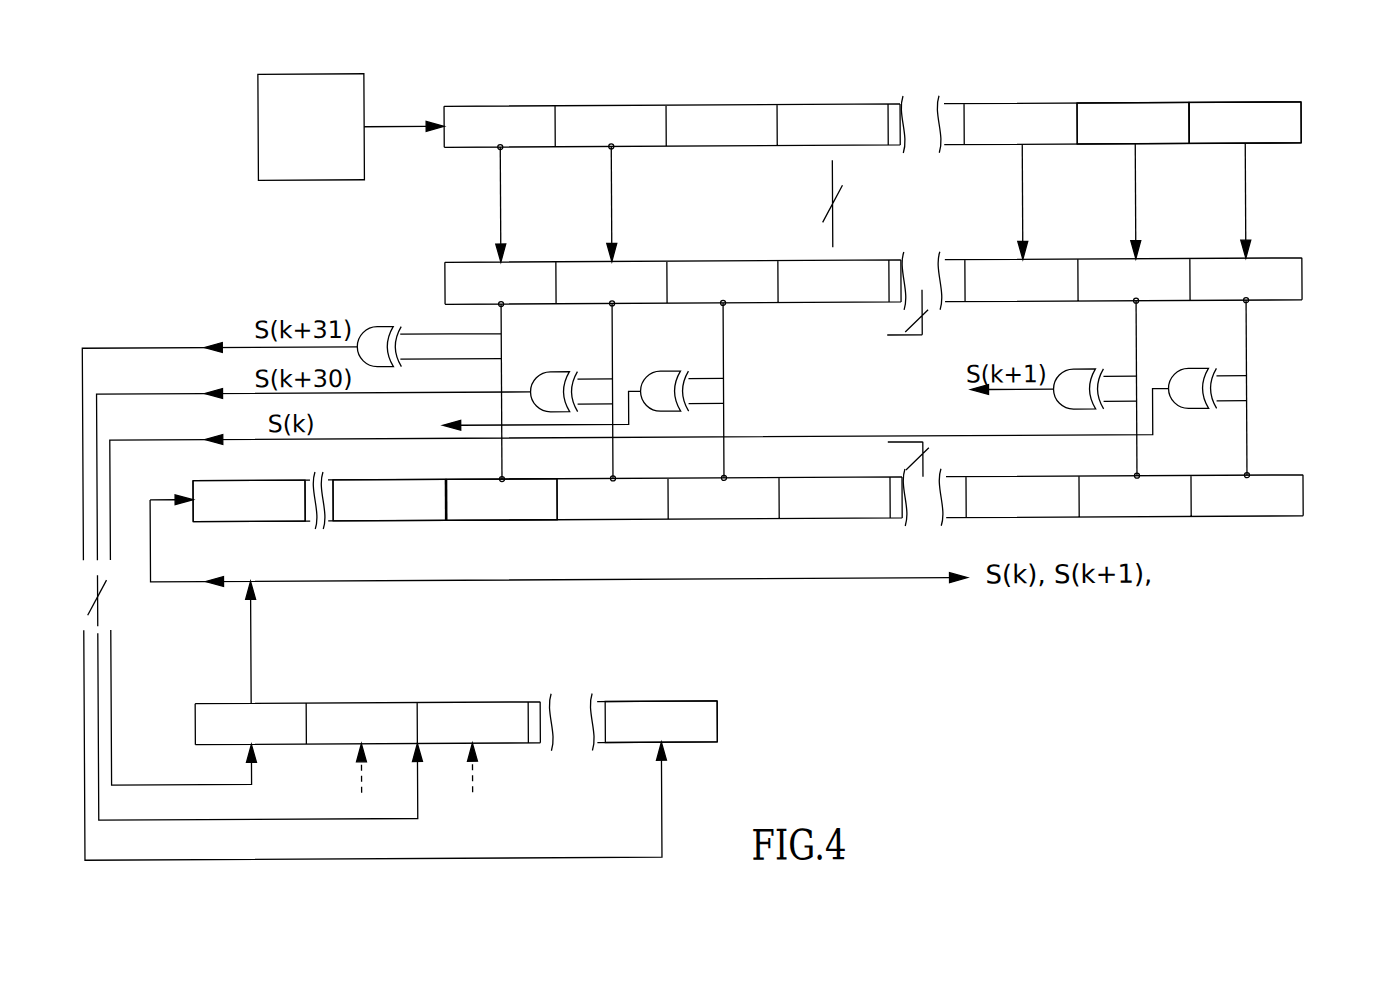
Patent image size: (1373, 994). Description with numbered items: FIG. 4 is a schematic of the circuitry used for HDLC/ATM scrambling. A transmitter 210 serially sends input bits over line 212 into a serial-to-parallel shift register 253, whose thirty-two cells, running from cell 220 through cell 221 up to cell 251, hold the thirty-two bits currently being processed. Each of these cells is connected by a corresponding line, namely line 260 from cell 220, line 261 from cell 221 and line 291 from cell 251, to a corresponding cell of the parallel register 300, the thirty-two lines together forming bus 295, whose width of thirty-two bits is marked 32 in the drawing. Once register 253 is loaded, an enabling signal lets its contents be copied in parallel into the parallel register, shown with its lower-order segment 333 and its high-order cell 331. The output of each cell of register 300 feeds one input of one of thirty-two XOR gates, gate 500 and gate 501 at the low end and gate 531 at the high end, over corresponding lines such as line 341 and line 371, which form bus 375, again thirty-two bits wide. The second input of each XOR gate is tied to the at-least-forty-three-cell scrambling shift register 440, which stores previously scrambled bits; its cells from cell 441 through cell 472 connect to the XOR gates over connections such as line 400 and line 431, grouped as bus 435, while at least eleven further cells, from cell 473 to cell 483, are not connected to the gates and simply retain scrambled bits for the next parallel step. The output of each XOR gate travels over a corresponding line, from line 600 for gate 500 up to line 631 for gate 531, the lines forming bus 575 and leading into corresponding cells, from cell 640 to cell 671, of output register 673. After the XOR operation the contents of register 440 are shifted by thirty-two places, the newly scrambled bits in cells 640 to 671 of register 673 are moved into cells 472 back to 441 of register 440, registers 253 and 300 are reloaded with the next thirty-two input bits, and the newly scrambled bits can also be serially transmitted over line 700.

The transmitter 210 is at (298, 72).
The line 212 is at (390, 122).
The memory cell 251 is at (507, 105).
The serial-to-parallel shift register 253 is at (1134, 87).
The memory cell 221 is at (1140, 105).
The memory cell 220 is at (1232, 105).
The line 291 is at (502, 168).
The bus 295 is at (833, 177).
The bus width 32 is at (901, 335).
The line 261 is at (1137, 176).
The line 260 is at (1247, 177).
The parallel register 300 is at (905, 246).
The memory cell 331 is at (471, 261).
The parallel register 333 is at (1284, 248).
The line 371 is at (502, 322).
The XOR gate 531 is at (374, 328).
The line 631 is at (112, 342).
The line 600 is at (156, 436).
The line from S(k-12) 431 is at (502, 452).
The bus 375 is at (904, 338).
The line 341 is at (1137, 330).
The XOR gate 501 is at (1072, 373).
The XOR gate 500 is at (1190, 377).
The line from S(k-43) 400 is at (1247, 439).
The memory cell 441 is at (783, 478).
The shift register 440 is at (1285, 460).
The 32-bit bus indicator 435 is at (904, 445).
The memory cell 483 is at (232, 519).
The memory cell 473 is at (376, 519).
The memory cell 472 is at (489, 519).
The bus 575 is at (118, 598).
The line 700 is at (862, 580).
The memory cell 640 is at (273, 701).
The register 673 is at (668, 687).
The memory cell 671 is at (665, 701).